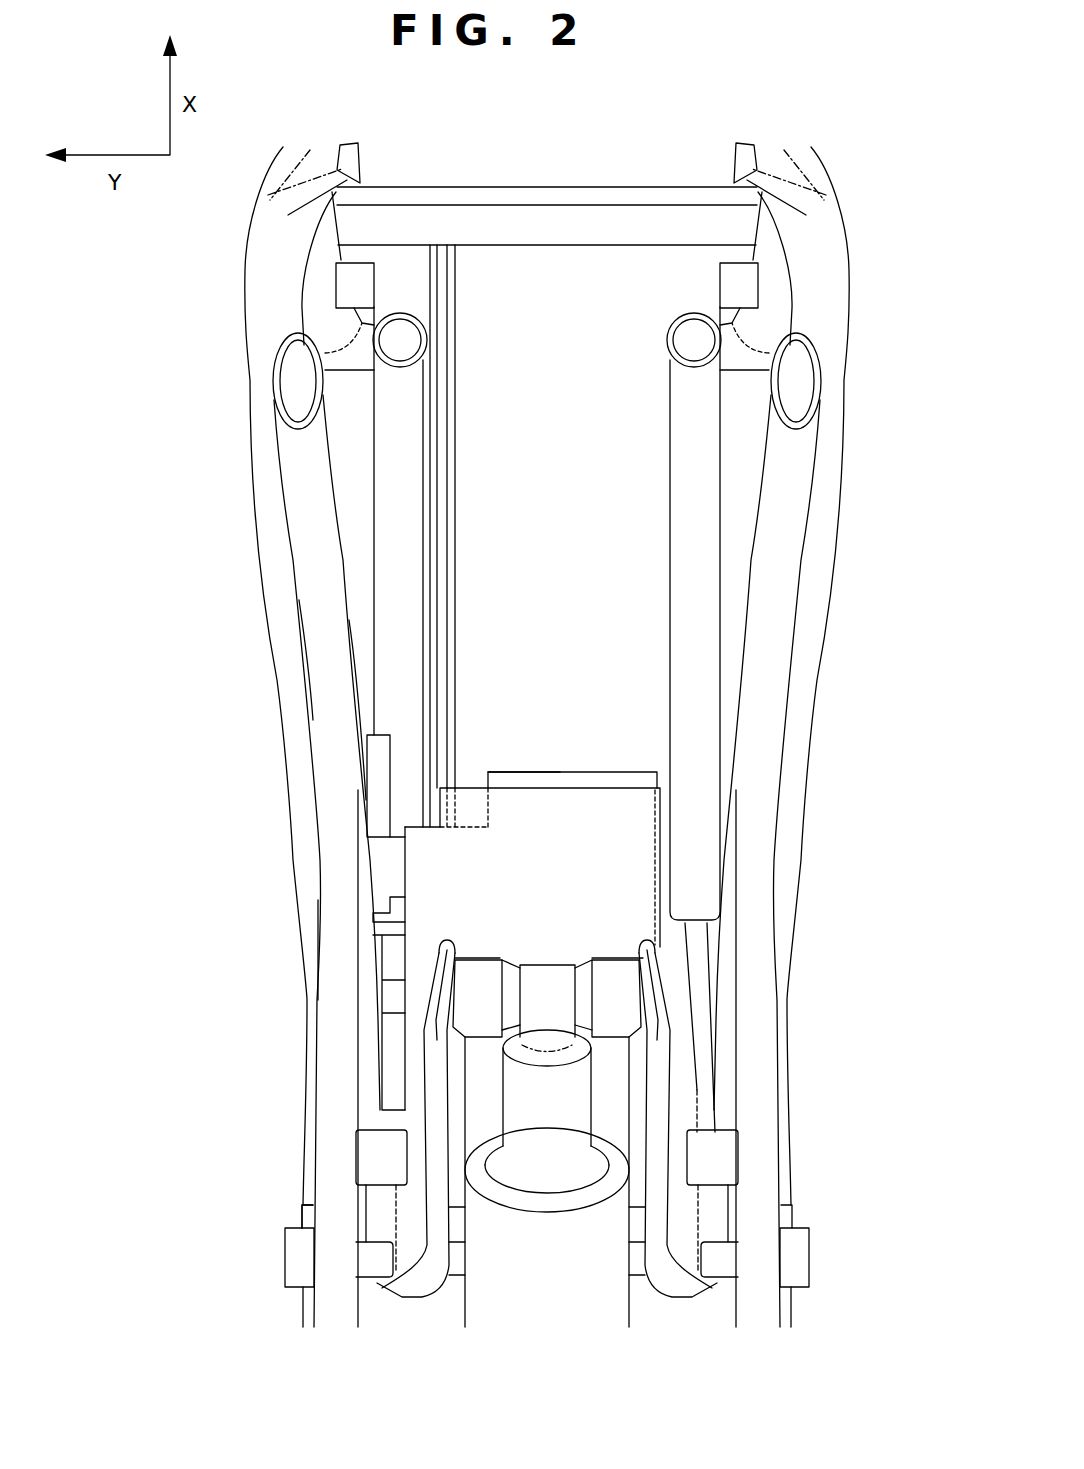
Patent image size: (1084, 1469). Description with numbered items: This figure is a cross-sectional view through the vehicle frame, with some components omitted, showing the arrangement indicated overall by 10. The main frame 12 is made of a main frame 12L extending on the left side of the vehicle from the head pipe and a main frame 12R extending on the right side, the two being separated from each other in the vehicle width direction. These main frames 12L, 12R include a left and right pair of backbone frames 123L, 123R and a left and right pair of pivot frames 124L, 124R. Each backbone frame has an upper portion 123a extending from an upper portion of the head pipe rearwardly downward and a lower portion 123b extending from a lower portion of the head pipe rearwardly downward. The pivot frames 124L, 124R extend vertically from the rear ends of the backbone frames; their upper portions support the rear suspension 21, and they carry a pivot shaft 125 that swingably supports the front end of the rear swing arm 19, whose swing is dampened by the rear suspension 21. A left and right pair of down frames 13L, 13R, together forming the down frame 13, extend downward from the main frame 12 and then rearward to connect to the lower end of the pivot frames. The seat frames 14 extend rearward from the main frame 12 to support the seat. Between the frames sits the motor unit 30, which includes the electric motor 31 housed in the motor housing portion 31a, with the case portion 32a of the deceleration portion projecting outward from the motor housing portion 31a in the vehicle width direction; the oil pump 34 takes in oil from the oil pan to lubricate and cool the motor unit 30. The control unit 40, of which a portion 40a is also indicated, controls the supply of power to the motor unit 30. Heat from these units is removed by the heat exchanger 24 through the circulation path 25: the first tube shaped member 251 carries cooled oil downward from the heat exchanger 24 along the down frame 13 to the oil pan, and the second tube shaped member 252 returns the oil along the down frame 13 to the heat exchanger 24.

The apparatus 10 is at (885, 188).
The main frame 12 is at (862, 378).
The main frame 12L is at (240, 532).
The main frame 12R is at (845, 592).
The down frame 13 is at (638, 453).
The down frame 13L is at (370, 497).
The down frame 13R is at (713, 465).
The seat frame 14 is at (330, 947).
The rear swing arm 19 is at (301, 1218).
The rear suspension 21 is at (520, 1245).
The heat exchanger 24 is at (572, 187).
The circulation path 25 is at (470, 331).
The first tube shaped member 251 is at (460, 276).
The second tube shaped member 252 is at (426, 314).
The motor unit 30 is at (563, 758).
The electric motor 31 is at (450, 890).
The motor housing portion 31a is at (500, 770).
The case portion 32a is at (395, 938).
The oil pump 34 is at (358, 786).
The control unit 40 is at (672, 820).
The sensor surface 40a is at (608, 788).
The backbone frame 123L is at (228, 580).
The backbone frame 123R is at (852, 696).
The upper portion 123a is at (325, 690).
The lower portion 123b is at (287, 638).
The pivot frame 124L is at (388, 1117).
The pivot frame 124R is at (700, 1107).
The pivot shaft 125 is at (285, 1255).